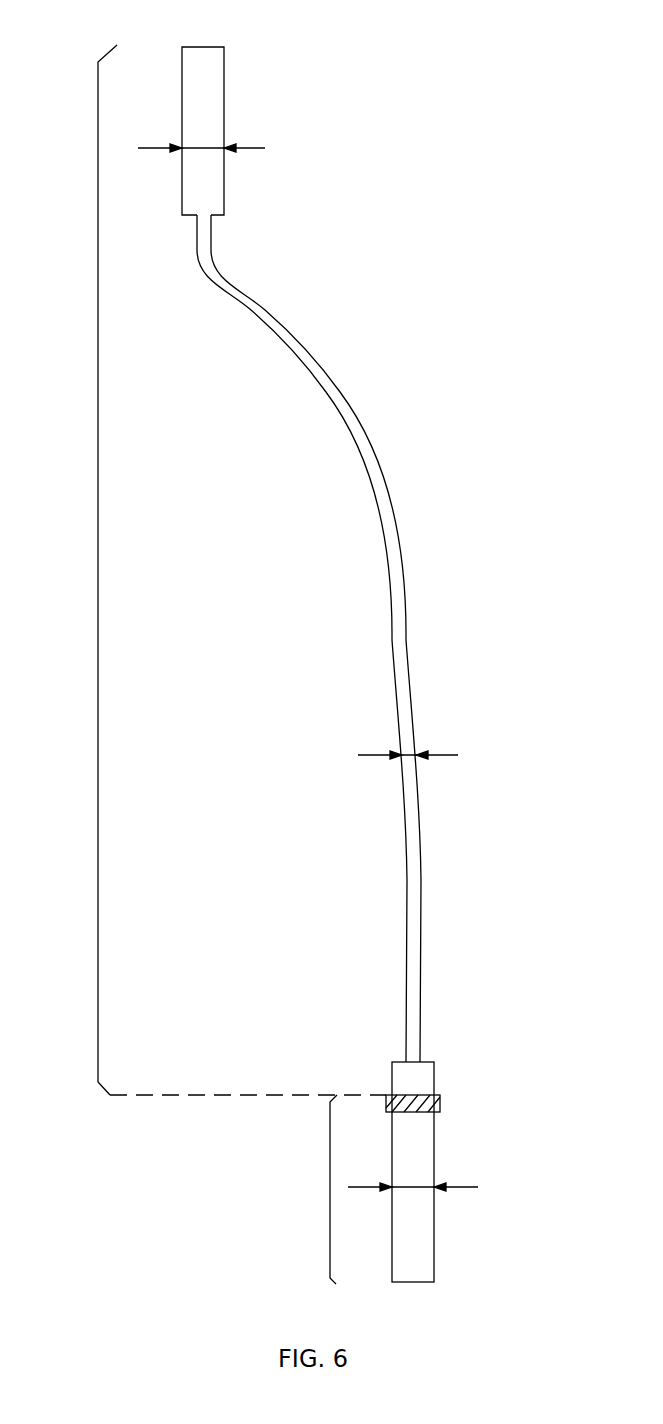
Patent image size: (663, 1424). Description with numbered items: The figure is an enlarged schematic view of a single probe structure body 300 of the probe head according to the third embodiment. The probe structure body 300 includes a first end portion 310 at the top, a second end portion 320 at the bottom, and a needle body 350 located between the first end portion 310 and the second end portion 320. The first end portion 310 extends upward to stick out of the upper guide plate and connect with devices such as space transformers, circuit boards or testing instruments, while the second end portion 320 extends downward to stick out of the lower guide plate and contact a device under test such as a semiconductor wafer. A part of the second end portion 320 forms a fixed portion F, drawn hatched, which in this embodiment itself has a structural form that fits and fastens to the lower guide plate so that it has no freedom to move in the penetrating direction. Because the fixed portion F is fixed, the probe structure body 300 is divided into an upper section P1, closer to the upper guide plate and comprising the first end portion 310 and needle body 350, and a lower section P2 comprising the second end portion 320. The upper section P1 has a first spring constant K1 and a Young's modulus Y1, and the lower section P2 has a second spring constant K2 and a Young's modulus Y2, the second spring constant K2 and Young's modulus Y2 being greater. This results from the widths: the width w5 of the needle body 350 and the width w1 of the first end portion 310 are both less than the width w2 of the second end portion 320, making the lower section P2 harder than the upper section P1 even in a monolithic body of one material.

The probe structure body 300 is at (85, 21).
The first end portion 310 is at (218, 97).
The second end portion 320 is at (418, 1223).
The needle body 350 is at (373, 480).
The fixed portion F is at (440, 1098).
The width of the first end portion w1 is at (211, 137).
The width of the second end portion w2 is at (421, 1174).
The width of the needle body w5 is at (416, 742).
The Young's modulus of the upper section Y1 is at (265, 309).
The Young's modulus of the lower section Y2 is at (424, 1292).
The first spring constant K1 is at (352, 393).
The second spring constant K2 is at (446, 1250).
The upper section P1 is at (73, 584).
The lower section P2 is at (315, 1189).